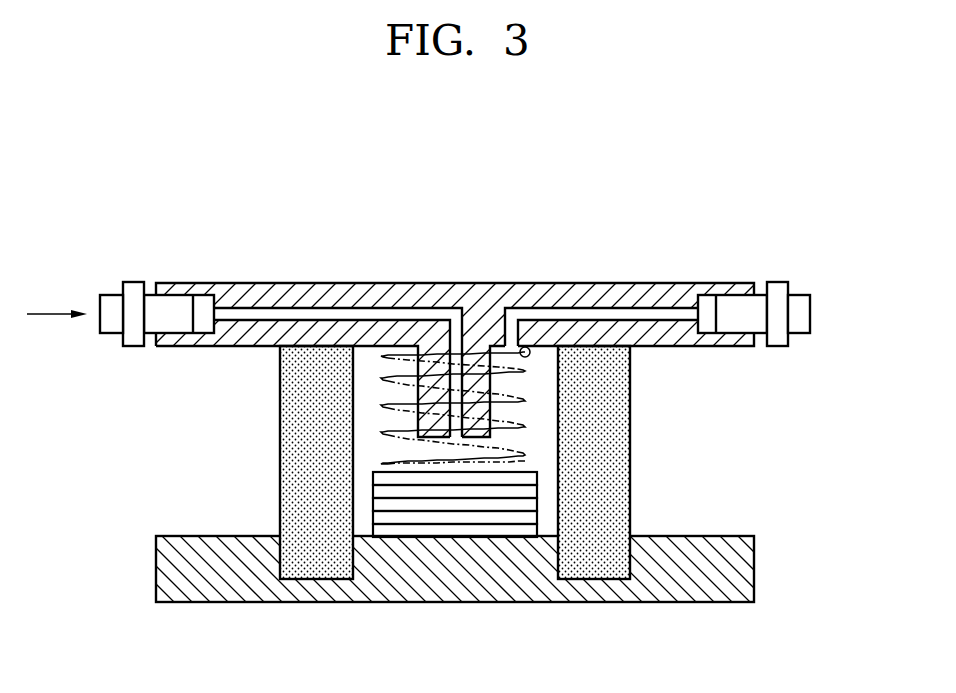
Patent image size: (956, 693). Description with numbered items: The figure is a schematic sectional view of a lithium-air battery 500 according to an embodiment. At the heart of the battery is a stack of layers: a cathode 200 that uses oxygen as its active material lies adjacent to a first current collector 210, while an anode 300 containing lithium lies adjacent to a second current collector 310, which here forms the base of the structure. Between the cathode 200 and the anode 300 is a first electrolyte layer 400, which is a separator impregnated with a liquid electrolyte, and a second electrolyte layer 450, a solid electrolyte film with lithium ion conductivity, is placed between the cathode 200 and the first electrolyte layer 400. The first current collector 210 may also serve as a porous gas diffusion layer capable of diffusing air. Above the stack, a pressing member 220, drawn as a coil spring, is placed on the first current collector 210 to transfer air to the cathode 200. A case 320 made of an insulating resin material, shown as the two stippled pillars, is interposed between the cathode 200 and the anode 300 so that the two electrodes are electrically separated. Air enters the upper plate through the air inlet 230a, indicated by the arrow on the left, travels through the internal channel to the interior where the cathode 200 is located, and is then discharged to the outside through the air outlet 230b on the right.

The lithium-air battery 500 is at (136, 226).
The air inlet 230a is at (113, 327).
The air outlet 230b is at (798, 325).
The pressing member 220 is at (522, 401).
The case 320 is at (292, 448).
The second current collector 310 is at (165, 570).
The first current collector 210 is at (532, 475).
The cathode 200 is at (532, 490).
The second electrolyte layer 450 is at (532, 503).
The first electrolyte layer 400 is at (532, 516).
The anode 300 is at (532, 529).